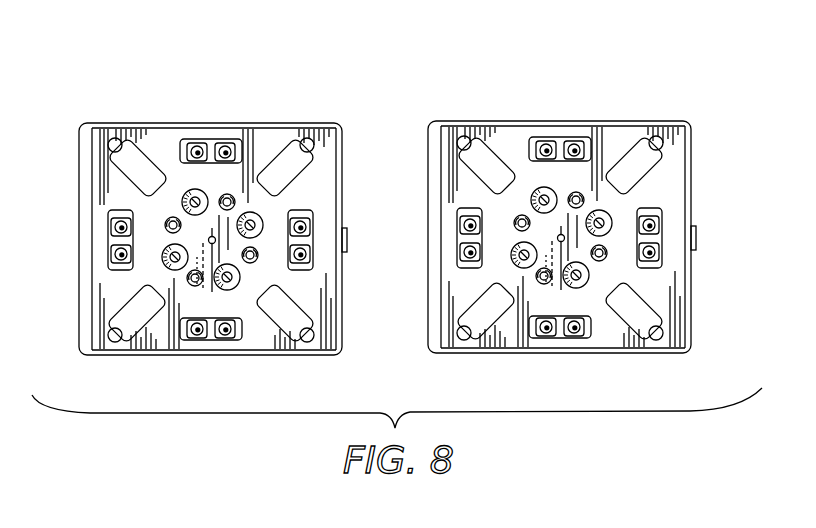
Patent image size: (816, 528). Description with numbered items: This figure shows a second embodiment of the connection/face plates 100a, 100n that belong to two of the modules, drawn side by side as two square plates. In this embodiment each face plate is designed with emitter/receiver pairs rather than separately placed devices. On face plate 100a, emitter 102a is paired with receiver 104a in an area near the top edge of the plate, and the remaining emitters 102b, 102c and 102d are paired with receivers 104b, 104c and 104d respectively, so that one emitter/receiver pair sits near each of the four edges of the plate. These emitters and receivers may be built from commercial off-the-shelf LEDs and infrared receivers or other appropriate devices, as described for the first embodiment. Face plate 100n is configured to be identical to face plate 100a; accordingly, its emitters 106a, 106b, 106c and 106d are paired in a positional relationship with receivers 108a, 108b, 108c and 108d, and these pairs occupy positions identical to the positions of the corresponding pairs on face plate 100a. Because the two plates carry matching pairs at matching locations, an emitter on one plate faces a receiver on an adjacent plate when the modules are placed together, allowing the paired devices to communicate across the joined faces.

The connection/face plate 100a is at (206, 88).
The connection/face plate 100n is at (556, 84).
The emitter 102a is at (196, 146).
The receiver 104a is at (227, 146).
The emitter 102b is at (305, 229).
The receiver 104b is at (305, 256).
The emitter 102c is at (227, 334).
The receiver 104c is at (196, 334).
The emitter 102d is at (116, 252).
The receiver 104d is at (116, 226).
The emitter 106a is at (546, 144).
The receiver 108a is at (576, 144).
The emitter 106b is at (655, 226).
The receiver 108b is at (655, 252).
The emitter 106c is at (575, 332).
The receiver 108c is at (546, 332).
The emitter 106d is at (466, 251).
The receiver 108d is at (466, 224).